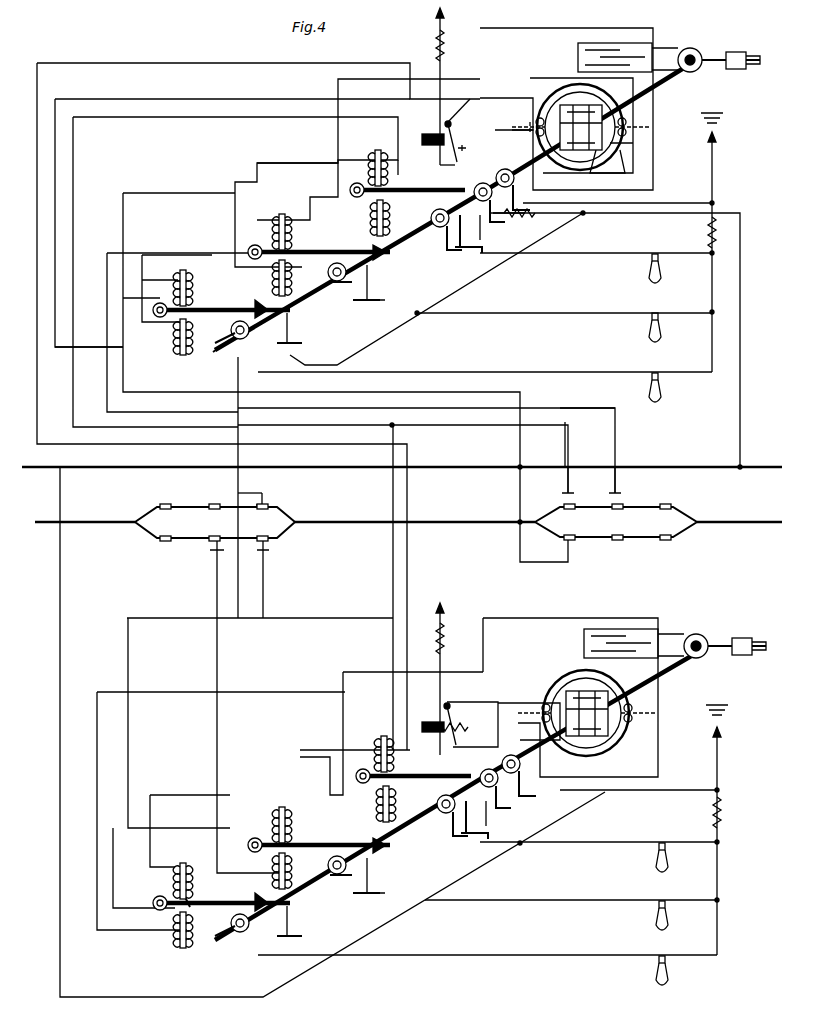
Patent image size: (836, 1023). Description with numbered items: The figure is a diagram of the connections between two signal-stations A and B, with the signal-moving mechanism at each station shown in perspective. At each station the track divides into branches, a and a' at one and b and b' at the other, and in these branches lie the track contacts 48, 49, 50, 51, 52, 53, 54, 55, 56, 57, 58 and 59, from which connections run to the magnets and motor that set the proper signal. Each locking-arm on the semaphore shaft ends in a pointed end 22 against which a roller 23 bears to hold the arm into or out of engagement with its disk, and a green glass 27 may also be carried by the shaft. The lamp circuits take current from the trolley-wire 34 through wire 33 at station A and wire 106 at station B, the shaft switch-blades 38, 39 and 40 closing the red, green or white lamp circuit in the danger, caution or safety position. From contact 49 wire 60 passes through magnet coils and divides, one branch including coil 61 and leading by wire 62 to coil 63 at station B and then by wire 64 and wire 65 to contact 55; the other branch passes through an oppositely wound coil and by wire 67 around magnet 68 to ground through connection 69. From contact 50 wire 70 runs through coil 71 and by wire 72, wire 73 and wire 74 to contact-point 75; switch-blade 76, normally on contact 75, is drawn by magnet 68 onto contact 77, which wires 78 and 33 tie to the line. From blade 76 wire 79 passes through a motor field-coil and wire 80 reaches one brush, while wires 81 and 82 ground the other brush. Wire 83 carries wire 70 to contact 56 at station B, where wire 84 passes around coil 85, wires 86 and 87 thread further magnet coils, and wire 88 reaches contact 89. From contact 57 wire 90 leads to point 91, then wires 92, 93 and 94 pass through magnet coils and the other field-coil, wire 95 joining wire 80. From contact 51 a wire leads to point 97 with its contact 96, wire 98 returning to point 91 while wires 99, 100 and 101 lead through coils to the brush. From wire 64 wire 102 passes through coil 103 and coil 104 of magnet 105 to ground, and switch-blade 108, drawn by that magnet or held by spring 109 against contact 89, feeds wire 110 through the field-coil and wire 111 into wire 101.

The pointed end 22 is at (308, 872).
The roller 23 is at (335, 891).
The green glass 27 is at (228, 332).
The wire 33 is at (558, 236).
The trolley-wire 34 is at (110, 470).
The switch-blade 38 is at (249, 960).
The switch-blade 39 is at (344, 900).
The switch-blade 40 is at (443, 861).
The contact 48 is at (668, 504).
The contact 49 is at (612, 504).
The contact 50 is at (564, 504).
The contact-point 51 is at (268, 506).
The contact 52 is at (219, 497).
The contact 53 is at (164, 504).
The contact 54 is at (165, 541).
The contact 55 is at (223, 577).
The contact 56 is at (268, 545).
The contact 57 is at (574, 545).
The contact 58 is at (618, 541).
The contact 59 is at (668, 542).
The wire 60 is at (236, 216).
The coil 61 is at (390, 170).
The wire 62 is at (120, 63).
The coil 63 is at (407, 735).
The wire 64 is at (290, 758).
The wire 65 is at (222, 750).
The wire 67 is at (435, 155).
The magnet 68 is at (430, 134).
The resistance 69 is at (443, 70).
The wire 70 is at (222, 118).
The coil 71 is at (368, 165).
The wire 72 is at (290, 163).
The wire 73 is at (158, 252).
The wire 74 is at (222, 100).
The contact-point 75 is at (460, 156).
The switch-blade 76 is at (470, 148).
The contact 77 is at (443, 174).
The wire 78 is at (515, 216).
The wire 79 is at (506, 114).
The wire 80 is at (516, 30).
The wire 81 is at (658, 203).
The wire 82 is at (714, 175).
The wire 83 is at (393, 553).
The wire 84 is at (395, 645).
The coil 85 is at (622, 790).
The wire 86 is at (312, 750).
The wire 87 is at (190, 827).
The wire 88 is at (172, 693).
The contact 89 is at (457, 747).
The wire 90 is at (408, 394).
The point 91 is at (237, 386).
The wire 92 is at (147, 393).
The wire 93 is at (125, 252).
The wire 94 is at (506, 80).
The wire 95 is at (630, 165).
The track contact 96 is at (268, 490).
The point 97 is at (250, 482).
The wire 98 is at (238, 462).
The wire 99 is at (240, 612).
The wire 100 is at (190, 831).
The wire 101 is at (346, 714).
The wire 102 is at (438, 737).
The coil 103 is at (358, 757).
The coil 104 is at (429, 667).
The magnet 105 is at (452, 724).
The wire 106 is at (62, 662).
The switch-blade 108 is at (472, 724).
The spring 109 is at (526, 721).
The wire 110 is at (513, 695).
The wire 111 is at (660, 740).
The track section rail a is at (192, 553).
The track branch a' is at (191, 491).
The track branch b is at (642, 553).
The track branch b' is at (644, 487).
The station A is at (616, 522).
The station B is at (215, 522).